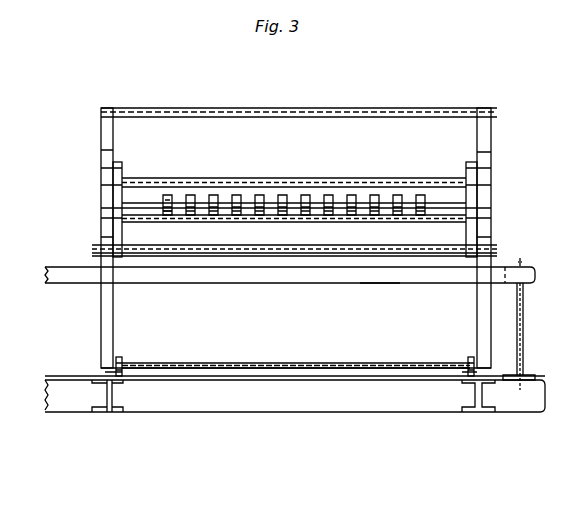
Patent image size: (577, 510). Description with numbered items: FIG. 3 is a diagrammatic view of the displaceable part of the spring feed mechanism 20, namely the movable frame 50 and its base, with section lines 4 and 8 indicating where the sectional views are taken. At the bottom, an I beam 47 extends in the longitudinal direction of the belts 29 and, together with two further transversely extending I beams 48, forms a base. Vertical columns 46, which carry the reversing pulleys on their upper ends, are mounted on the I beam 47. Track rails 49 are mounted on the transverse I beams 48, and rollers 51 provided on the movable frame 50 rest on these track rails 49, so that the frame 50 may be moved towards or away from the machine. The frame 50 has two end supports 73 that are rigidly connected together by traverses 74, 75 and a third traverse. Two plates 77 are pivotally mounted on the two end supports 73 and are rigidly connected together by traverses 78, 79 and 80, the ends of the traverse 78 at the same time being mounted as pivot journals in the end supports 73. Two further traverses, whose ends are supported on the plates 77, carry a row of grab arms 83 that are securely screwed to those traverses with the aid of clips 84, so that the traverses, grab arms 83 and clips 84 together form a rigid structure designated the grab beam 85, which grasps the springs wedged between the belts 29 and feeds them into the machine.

The section line 4- 4 is at (297, 100).
The section line 8- 8 is at (460, 125).
The corrugating apparatus 20 is at (193, 104).
The belts 29 is at (378, 284).
The vertical columns 46 is at (521, 326).
The I beam 47 is at (505, 410).
The transversely extending I beams 48 is at (110, 414).
The track rails 49 is at (108, 372).
The movable frame 50 is at (492, 149).
The rollers 51 is at (121, 362).
The end supports 73 is at (100, 307).
The traverse 74 is at (367, 114).
The traverse 75 is at (285, 393).
The plates 77 is at (112, 178).
The traverse 78 is at (300, 256).
The traverse 79 is at (327, 218).
The traverse 80 is at (292, 182).
The grab arms 83 is at (166, 196).
The clips 84 is at (172, 218).
The grab beam 85 is at (222, 200).